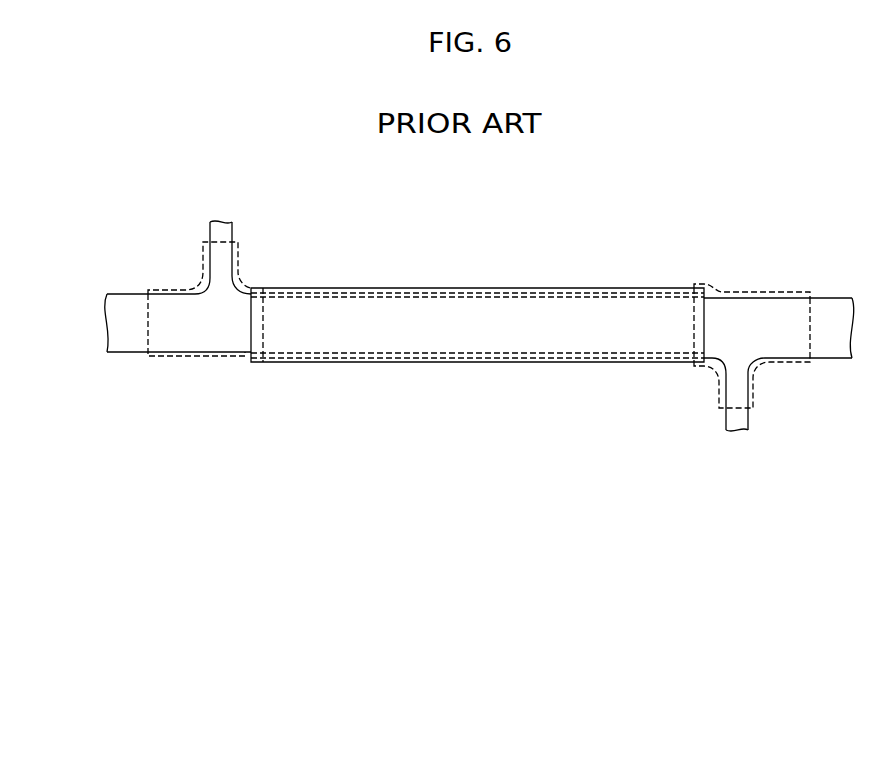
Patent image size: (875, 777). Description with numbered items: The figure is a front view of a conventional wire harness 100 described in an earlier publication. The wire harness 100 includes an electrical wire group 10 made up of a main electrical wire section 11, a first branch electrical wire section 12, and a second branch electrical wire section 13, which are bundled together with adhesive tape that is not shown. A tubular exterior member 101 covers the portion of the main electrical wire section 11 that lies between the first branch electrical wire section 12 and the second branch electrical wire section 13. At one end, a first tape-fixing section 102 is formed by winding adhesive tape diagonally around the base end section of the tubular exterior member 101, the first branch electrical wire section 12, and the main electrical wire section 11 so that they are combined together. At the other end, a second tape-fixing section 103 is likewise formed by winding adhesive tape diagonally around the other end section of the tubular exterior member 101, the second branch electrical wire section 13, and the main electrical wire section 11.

The electrical wire group 10 is at (832, 298).
The main electrical wire section 11 is at (832, 358).
The first branch electrical wire section 12 is at (212, 232).
The second branch electrical wire section 13 is at (730, 420).
The wire harness 100 is at (502, 376).
The tubular exterior member 101 is at (346, 288).
The first tape-fixing section 102 is at (203, 357).
The second tape-fixing section 103 is at (718, 287).